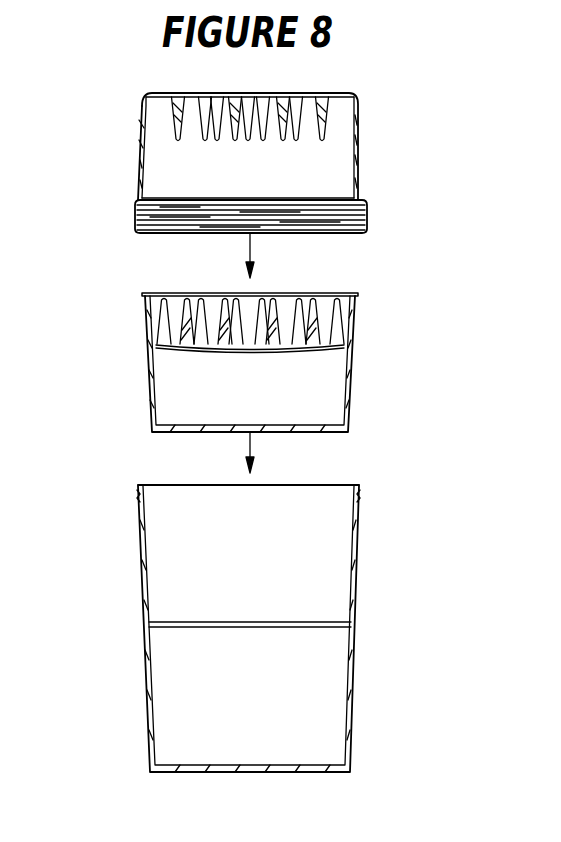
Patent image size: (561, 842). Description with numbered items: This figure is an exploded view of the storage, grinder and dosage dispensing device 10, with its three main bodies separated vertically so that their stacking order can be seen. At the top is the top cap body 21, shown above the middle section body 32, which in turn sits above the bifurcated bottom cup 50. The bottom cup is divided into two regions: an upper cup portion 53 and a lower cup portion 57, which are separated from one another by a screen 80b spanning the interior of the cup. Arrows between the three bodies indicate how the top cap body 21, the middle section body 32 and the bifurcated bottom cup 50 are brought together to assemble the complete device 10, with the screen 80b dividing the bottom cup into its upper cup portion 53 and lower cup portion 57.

The storage, grinder and dosage dispensing device 10 is at (86, 88).
The top cap body 21 is at (140, 147).
The middle section body 32 is at (150, 386).
The bifurcated bottom cup 50 is at (357, 598).
The upper cup portion 53 is at (341, 531).
The lower cup portion 57 is at (334, 739).
The screen 80b is at (253, 622).